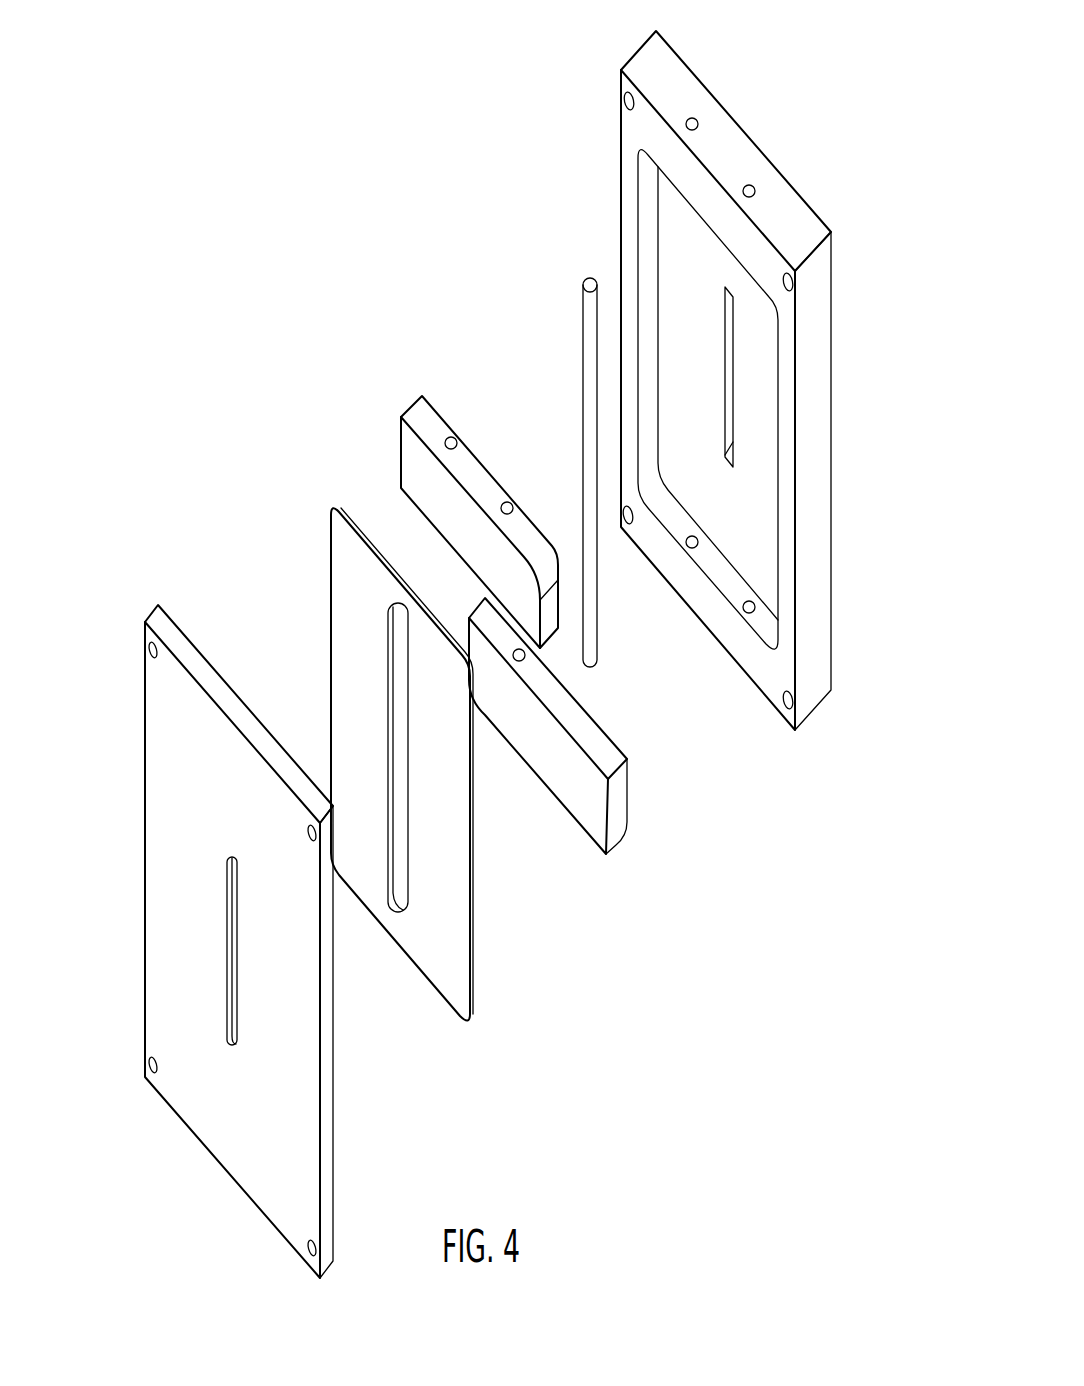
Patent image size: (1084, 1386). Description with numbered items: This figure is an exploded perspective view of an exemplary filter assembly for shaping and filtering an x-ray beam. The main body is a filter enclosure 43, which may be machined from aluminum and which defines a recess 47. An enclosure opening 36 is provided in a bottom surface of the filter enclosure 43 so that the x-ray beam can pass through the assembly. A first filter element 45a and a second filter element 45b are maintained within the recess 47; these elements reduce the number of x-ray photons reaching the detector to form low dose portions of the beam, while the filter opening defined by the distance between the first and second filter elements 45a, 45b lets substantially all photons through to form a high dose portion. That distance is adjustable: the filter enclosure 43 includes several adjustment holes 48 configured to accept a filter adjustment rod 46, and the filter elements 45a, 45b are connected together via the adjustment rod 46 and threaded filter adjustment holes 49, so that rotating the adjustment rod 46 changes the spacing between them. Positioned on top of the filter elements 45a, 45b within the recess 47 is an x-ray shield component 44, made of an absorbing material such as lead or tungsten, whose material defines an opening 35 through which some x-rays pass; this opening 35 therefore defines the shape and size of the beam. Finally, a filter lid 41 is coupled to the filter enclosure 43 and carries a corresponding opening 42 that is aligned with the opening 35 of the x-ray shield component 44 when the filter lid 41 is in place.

The opening 35 is at (388, 756).
The enclosure opening 36 is at (725, 388).
The filter lid 41 is at (145, 806).
The corresponding opening 42 is at (227, 913).
The filter enclosure 43 is at (826, 443).
The x-ray shield component 44 is at (331, 605).
The first filter element 45a is at (627, 800).
The second filter element 45b is at (401, 455).
The filter adjustment rod 46 is at (583, 350).
The recess 47 is at (640, 212).
The adjustment holes 48 is at (692, 117).
The filter adjustment holes 49 is at (451, 436).